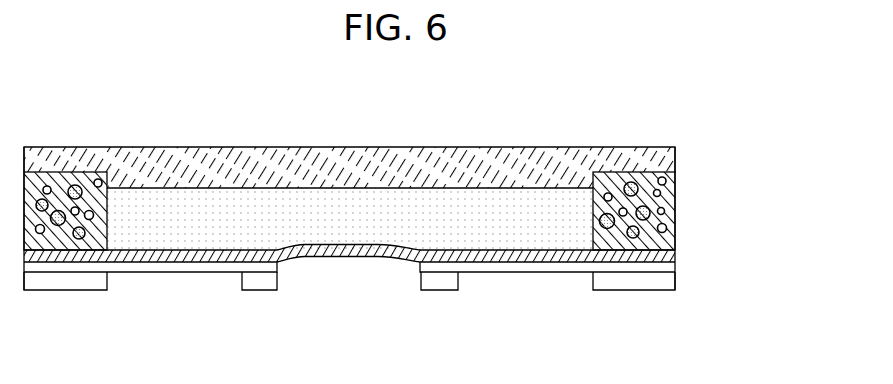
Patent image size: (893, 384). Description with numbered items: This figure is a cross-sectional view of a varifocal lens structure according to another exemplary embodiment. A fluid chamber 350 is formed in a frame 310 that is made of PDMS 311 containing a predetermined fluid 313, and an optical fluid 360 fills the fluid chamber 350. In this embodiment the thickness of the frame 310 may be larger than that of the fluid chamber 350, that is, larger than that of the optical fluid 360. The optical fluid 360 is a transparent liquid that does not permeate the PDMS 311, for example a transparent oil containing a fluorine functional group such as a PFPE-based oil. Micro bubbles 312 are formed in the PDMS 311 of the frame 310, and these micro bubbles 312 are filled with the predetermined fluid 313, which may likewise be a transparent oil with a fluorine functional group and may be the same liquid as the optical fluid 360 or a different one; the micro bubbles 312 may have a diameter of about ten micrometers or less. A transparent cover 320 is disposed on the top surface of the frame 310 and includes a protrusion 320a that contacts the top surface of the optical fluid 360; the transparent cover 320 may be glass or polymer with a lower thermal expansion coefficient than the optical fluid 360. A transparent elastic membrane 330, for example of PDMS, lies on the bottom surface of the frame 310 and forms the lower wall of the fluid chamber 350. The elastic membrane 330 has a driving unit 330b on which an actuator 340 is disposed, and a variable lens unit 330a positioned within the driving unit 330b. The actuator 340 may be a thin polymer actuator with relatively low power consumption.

The frame 310 is at (415, 211).
The PDMS 311 is at (670, 190).
The micro bubbles 312 is at (650, 213).
The predetermined fluid 313 is at (650, 225).
The transparent cover 320 is at (675, 158).
The protrusion 320a is at (530, 188).
The transparent elastic membrane 330 is at (402, 287).
The variable lens unit 330a is at (348, 252).
The driving unit 330b is at (140, 262).
The actuator 340 is at (195, 282).
The fluid chamber 350 is at (370, 226).
The optical fluid 360 is at (433, 203).